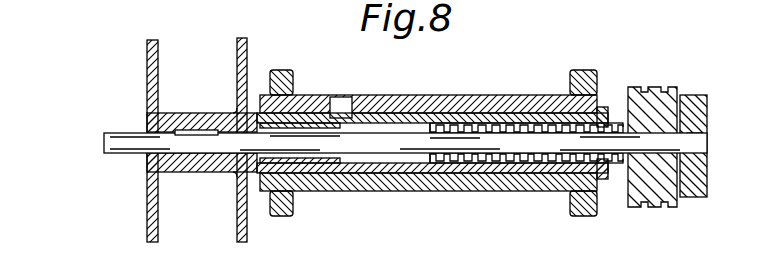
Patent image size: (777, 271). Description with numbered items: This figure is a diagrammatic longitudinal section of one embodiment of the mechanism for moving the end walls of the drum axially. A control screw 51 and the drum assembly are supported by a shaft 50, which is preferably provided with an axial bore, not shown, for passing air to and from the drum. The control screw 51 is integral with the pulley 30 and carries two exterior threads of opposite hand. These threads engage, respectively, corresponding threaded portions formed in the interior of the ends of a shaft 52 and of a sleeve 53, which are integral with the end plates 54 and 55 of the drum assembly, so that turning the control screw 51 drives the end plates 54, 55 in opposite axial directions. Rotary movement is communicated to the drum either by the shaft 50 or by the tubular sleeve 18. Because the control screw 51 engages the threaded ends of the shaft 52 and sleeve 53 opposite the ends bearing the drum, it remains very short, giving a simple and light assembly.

The tubular sleeve 18 is at (558, 187).
The pulley 30 is at (660, 87).
The shaft 50 is at (104, 142).
The control screw 51 is at (427, 157).
The shaft 52 is at (472, 173).
The sleeve 53 is at (512, 173).
The end plate 54 is at (147, 60).
The end plate 55 is at (247, 52).